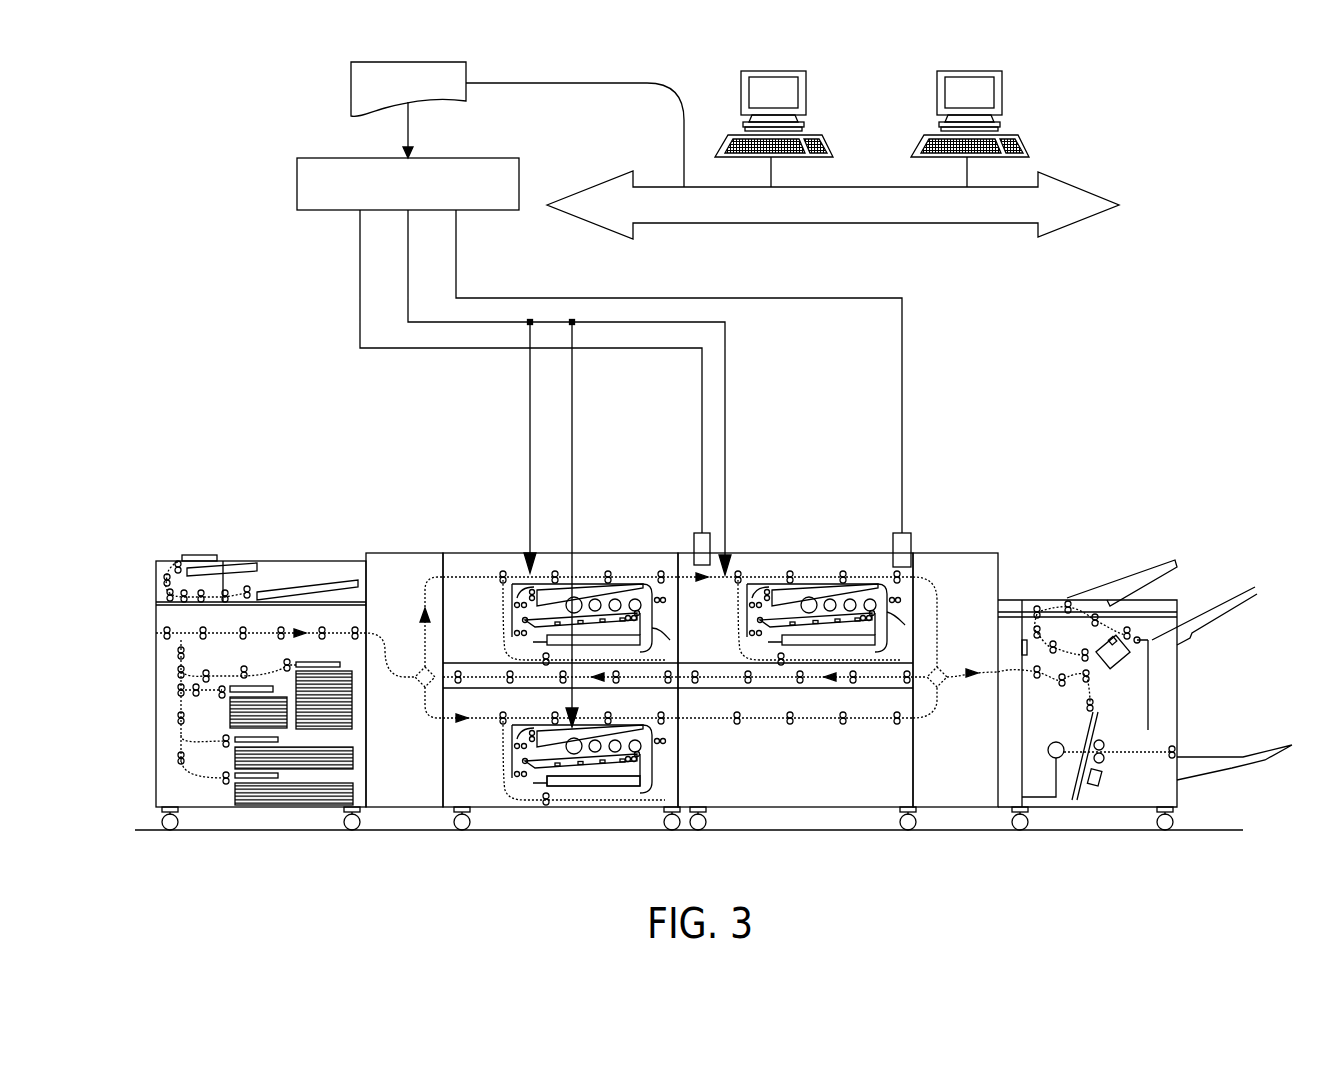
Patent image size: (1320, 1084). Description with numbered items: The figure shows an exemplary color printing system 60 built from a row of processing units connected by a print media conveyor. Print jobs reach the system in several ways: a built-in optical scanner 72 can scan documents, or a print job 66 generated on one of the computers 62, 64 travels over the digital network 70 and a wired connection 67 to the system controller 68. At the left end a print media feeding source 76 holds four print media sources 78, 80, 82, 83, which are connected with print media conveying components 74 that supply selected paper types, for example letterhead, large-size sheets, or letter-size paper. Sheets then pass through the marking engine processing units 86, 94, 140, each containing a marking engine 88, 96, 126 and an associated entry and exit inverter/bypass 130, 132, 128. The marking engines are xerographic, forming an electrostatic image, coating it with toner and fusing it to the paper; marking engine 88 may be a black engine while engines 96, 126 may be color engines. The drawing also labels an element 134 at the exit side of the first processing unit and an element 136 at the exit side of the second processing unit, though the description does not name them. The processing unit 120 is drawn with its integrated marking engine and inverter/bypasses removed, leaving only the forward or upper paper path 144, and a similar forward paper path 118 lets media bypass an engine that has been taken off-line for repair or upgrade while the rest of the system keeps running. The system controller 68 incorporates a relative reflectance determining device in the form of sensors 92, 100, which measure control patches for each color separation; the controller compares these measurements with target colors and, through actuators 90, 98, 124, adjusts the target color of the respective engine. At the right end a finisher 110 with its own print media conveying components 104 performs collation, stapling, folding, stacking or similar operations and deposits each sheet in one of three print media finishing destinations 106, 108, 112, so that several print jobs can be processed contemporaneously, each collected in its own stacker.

The printing system 60 is at (1015, 380).
The computer 62 is at (741, 88).
The computer 64 is at (937, 88).
The print job 66 is at (466, 92).
The wired connection 67 is at (585, 84).
The system controller 68 is at (314, 158).
The digital network 70 is at (880, 223).
The built-in optical scanner 72 is at (265, 558).
The print media conveying components 74 is at (215, 630).
The print media feeding source 76 is at (160, 665).
The print media source 78 is at (233, 710).
The print media source 80 is at (258, 800).
The print media source 82 is at (308, 756).
The print media source 83 is at (340, 722).
The first marking engine processing unit 86 is at (490, 553).
The first marking engine 88 is at (598, 590).
The actuator 90 is at (623, 618).
The sensor 92 is at (700, 533).
The second marking engine processing unit 94 is at (765, 553).
The second marking engine 96 is at (852, 600).
The actuator 98 is at (852, 622).
The sensor 100 is at (905, 530).
The print media conveying components 104 is at (1053, 604).
The print media finishing destination 106 is at (1132, 578).
The print media finishing destination 108 is at (1222, 598).
The finisher 110 is at (1178, 668).
The print media finishing destination 112 is at (1243, 757).
The forward paper path 118 is at (805, 718).
The processing unit 120 is at (732, 800).
The actuator 124 is at (608, 762).
The third marking engine 126 is at (575, 782).
The entry and exit inverter/bypass 128 is at (503, 782).
The entry and exit inverter/bypass 130 is at (503, 612).
The entry and exit inverter/bypass 132 is at (738, 612).
The output path 134 is at (670, 640).
The output path 136 is at (905, 625).
The nth marking engine processing unit 140 is at (478, 798).
The forward paper path 144 is at (820, 577).